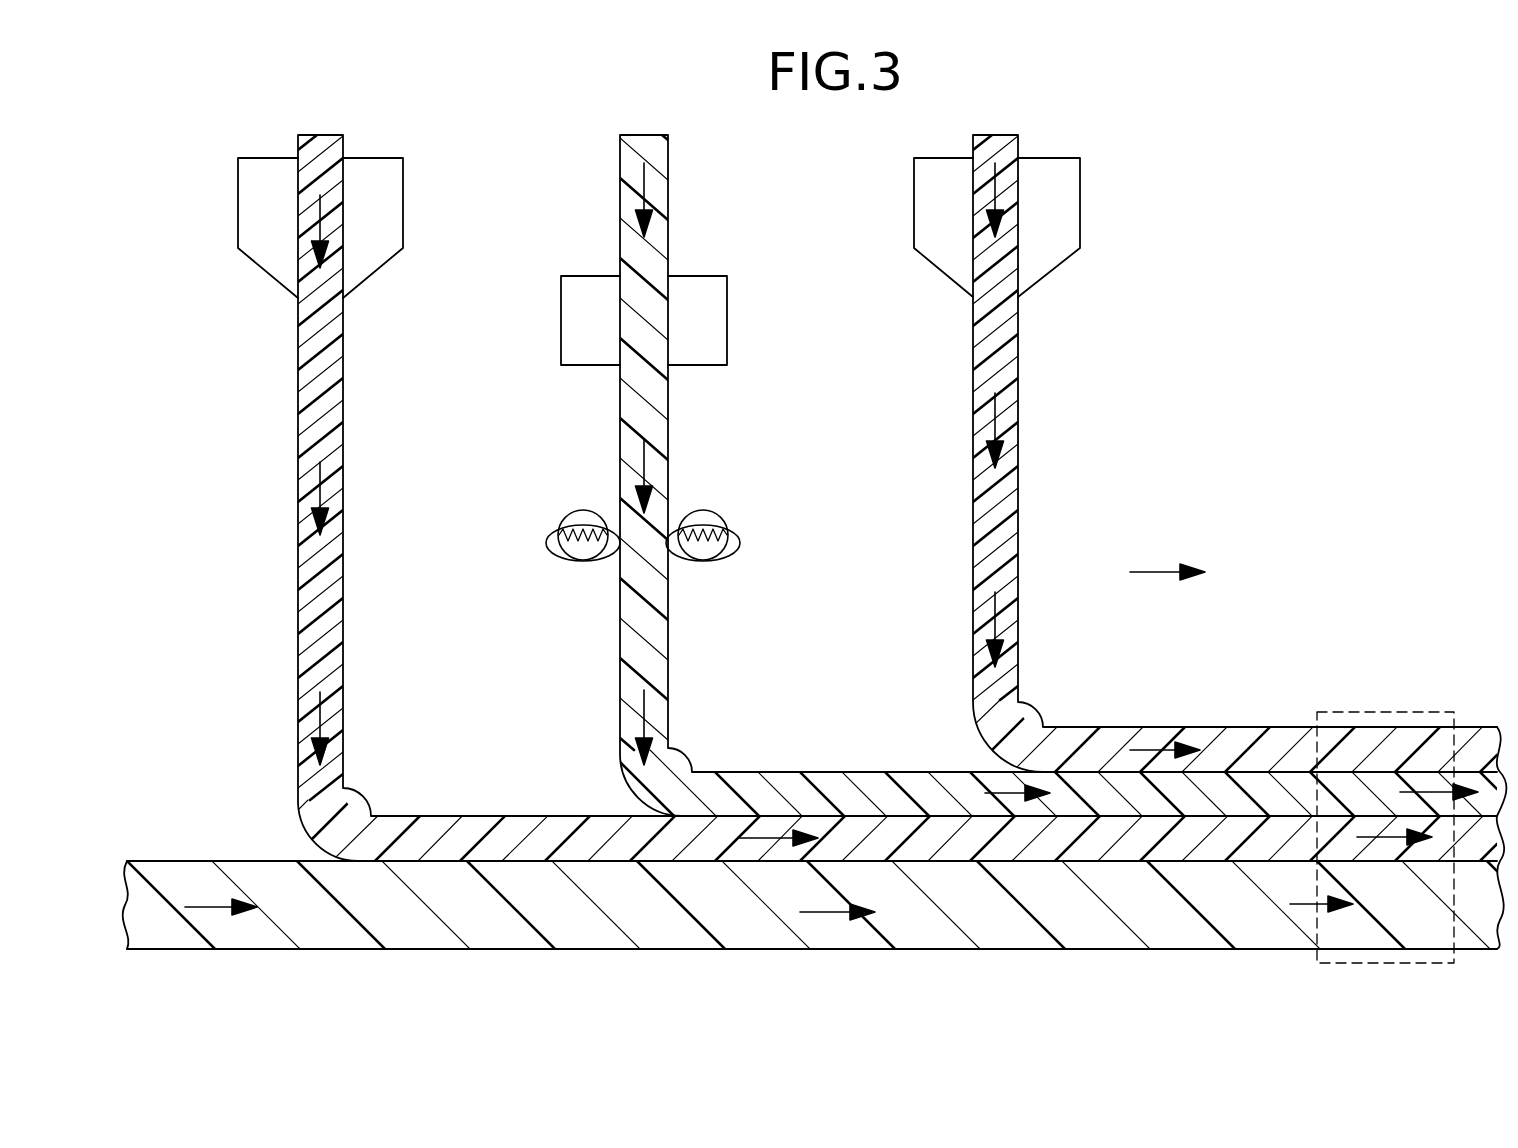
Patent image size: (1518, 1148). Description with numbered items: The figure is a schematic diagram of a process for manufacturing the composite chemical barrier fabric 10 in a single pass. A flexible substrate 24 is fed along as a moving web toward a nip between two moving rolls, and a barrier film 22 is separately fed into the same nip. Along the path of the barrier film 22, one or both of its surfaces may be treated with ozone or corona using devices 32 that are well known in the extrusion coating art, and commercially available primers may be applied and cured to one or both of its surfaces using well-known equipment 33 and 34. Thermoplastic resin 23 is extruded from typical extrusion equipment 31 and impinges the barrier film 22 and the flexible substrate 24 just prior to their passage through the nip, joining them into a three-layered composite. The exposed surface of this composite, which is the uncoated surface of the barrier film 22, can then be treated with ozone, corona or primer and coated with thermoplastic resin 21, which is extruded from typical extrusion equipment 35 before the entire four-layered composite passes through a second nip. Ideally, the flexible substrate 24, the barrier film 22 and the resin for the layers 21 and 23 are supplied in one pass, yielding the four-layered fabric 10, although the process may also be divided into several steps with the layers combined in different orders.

The composite chemical barrier fabric 10 is at (1374, 693).
The thermoplastic resin 21 is at (973, 398).
The barrier film 22 is at (620, 183).
The thermoplastic resin 23 is at (298, 404).
The flexible substrate 24 is at (267, 861).
The extrusion equipment 31 is at (238, 187).
The ozone or corona treatment devices 32 is at (561, 298).
The primer application equipment 33 is at (584, 510).
The primer curing equipment 34 is at (578, 561).
The extrusion equipment 35 is at (1080, 196).